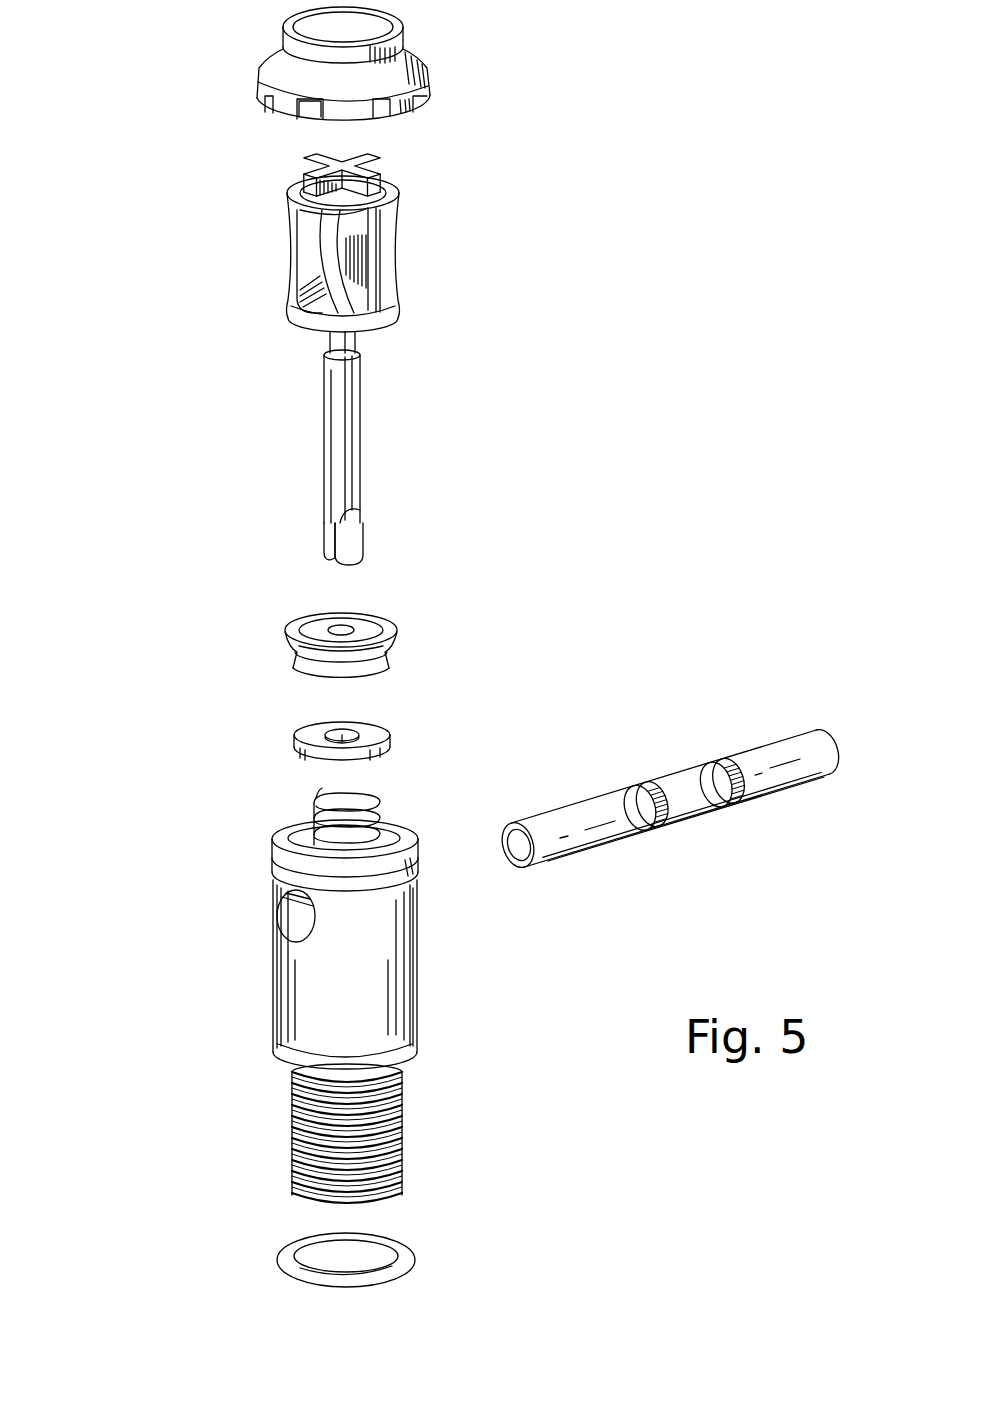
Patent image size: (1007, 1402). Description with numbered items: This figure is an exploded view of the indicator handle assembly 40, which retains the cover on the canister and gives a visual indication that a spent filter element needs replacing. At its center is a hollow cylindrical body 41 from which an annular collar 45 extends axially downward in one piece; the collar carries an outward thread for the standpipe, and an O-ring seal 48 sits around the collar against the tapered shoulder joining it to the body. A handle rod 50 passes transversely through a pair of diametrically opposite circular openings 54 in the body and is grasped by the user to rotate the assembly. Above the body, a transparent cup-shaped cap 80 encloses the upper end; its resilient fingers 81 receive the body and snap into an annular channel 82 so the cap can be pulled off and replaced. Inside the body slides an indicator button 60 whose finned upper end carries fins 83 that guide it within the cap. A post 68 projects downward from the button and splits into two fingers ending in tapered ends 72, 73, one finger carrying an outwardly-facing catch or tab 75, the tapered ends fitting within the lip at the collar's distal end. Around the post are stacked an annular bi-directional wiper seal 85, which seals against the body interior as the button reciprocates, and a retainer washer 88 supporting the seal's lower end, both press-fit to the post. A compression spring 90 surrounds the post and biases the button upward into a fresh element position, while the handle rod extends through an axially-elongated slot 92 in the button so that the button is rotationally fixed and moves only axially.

The indicator handle assembly 40 is at (600, 548).
The cylindrical body 41 is at (336, 1011).
The annular collar 45 is at (395, 1125).
The O-ring seal 48 is at (410, 1258).
The handle rod 50 is at (573, 833).
The circular openings 54 is at (290, 915).
The indicator button 60 is at (400, 253).
The post 68 is at (345, 420).
The tapered end 72 is at (320, 533).
The tapered end 73 is at (350, 545).
The catch or tab 75 is at (358, 508).
The transparent cup-shaped cap 80 is at (405, 40).
The resilient fingers 81 is at (287, 108).
The annular channel 82 is at (275, 868).
The fins 83 is at (378, 155).
The bi-directional wiper seal 85 is at (395, 652).
The retainer washer 88 is at (375, 732).
The compression spring 90 is at (315, 815).
The slot 92 is at (315, 250).